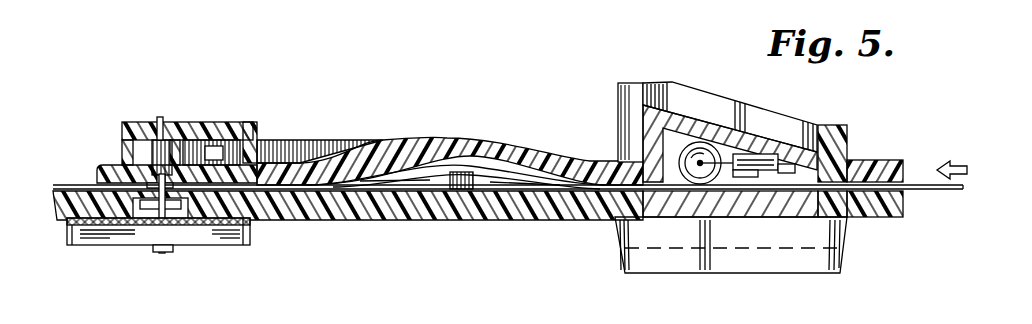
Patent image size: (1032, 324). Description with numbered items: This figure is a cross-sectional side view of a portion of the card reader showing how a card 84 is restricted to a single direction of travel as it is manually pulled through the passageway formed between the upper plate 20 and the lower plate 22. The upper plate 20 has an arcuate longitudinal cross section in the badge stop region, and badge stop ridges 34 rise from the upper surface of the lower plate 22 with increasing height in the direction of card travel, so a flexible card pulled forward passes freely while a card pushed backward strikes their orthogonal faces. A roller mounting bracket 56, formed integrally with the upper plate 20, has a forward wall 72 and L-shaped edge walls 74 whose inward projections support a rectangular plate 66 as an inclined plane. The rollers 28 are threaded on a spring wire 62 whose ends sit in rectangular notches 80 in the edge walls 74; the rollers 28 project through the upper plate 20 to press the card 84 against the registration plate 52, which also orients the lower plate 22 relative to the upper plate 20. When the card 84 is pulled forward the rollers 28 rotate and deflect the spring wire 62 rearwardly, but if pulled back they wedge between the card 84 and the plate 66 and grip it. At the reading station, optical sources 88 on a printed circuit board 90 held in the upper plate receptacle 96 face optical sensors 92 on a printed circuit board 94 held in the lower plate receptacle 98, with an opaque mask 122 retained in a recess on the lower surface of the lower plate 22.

The upper plate 20 is at (452, 147).
The lower plate 22 is at (522, 207).
The rollers 28 is at (697, 142).
The badge stop ridges 34 is at (473, 189).
The registration plate 52 is at (703, 204).
The roller mounting bracket 56 is at (618, 93).
The spring wire 62 is at (762, 178).
The rectangular plate 66 is at (755, 143).
The forward wall 72 is at (833, 140).
The edge walls 74 is at (692, 100).
The rectangular notches 80 is at (786, 174).
The card 84 is at (602, 186).
The optical sources 88 is at (155, 152).
The printed circuit board 90 is at (208, 130).
The optical sensors 92 is at (168, 224).
The printed circuit board 94 is at (228, 237).
The upper plate receptacle 96 is at (250, 125).
The lower plate receptacle 98 is at (253, 225).
The mask 122 is at (147, 230).